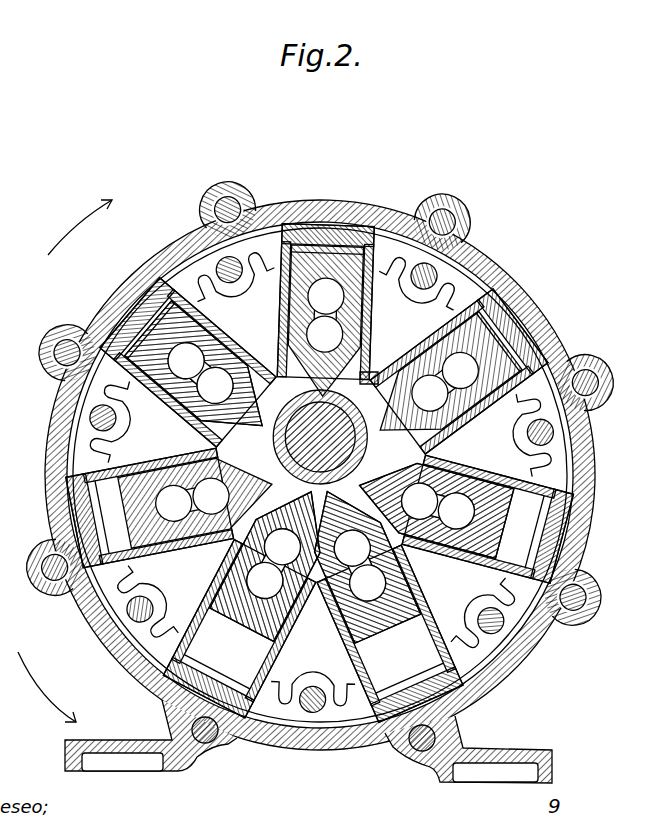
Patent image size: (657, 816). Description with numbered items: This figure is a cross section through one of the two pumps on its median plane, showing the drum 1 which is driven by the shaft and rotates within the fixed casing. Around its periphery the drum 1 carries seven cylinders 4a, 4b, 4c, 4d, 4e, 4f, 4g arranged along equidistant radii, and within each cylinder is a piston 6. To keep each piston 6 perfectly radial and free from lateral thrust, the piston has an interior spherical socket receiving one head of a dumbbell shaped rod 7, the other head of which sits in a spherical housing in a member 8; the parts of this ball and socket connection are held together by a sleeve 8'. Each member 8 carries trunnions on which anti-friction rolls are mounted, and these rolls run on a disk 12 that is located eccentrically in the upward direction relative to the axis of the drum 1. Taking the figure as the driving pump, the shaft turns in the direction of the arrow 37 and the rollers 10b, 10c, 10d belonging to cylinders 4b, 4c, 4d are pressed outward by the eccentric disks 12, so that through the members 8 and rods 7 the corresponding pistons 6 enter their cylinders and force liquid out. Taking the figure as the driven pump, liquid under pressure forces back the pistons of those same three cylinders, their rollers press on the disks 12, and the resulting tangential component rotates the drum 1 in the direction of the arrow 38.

The drum 1 is at (189, 278).
The cylinder 4a is at (291, 331).
The cylinder 4b is at (203, 420).
The cylinder 4c is at (174, 552).
The cylinder 4d is at (250, 655).
The cylinder 4e is at (374, 597).
The cylinder 4f is at (484, 560).
The cylinder 4g is at (458, 430).
The piston 6 is at (413, 588).
The dumbbell shaped rod 7 is at (407, 535).
The member 8 is at (276, 558).
The sleeve 8' is at (205, 381).
The roller 10b is at (125, 405).
The roller 10c is at (116, 442).
The roller 10d is at (208, 580).
The disk 12 is at (373, 379).
The arrow 37 is at (82, 214).
The arrow 38 is at (47, 689).